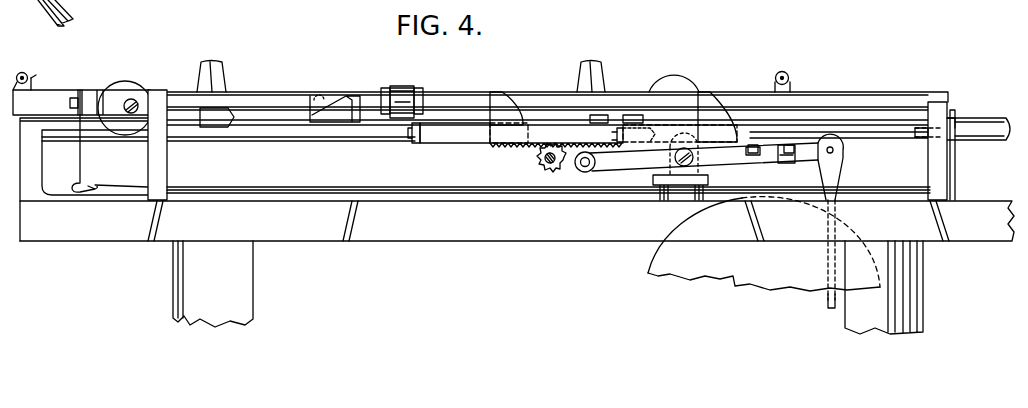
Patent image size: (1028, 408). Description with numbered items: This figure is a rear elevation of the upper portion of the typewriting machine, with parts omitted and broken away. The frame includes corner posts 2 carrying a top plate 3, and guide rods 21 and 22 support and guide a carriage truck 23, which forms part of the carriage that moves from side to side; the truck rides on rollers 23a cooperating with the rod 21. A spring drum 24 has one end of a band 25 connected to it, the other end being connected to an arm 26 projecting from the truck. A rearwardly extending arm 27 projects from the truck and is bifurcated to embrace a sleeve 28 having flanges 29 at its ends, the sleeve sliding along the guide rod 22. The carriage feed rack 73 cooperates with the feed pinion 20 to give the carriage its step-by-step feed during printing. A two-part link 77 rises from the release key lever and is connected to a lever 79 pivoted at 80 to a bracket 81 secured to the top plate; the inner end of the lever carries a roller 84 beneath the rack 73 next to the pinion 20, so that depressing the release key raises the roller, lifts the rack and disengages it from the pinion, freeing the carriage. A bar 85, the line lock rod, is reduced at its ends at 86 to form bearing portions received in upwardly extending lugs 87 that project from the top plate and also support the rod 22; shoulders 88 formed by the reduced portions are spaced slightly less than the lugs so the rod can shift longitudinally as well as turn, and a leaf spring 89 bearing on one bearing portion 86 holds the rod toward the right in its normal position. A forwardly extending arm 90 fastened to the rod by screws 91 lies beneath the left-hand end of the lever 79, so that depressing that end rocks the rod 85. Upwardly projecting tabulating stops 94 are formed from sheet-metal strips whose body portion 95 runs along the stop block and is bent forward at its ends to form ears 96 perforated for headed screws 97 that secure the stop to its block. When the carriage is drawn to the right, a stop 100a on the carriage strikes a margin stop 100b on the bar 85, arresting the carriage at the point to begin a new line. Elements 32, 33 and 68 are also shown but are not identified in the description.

The corner posts 2 is at (213, 284).
The top plate 3 is at (517, 221).
The feed pinion 20 is at (542, 168).
The guide rod 21 is at (52, 135).
The guide rod 22 is at (863, 100).
The carriage truck 23 is at (81, 104).
The rollers 23a is at (146, 90).
The spring drum 24 is at (764, 244).
The band 25 is at (256, 187).
The arm 26 is at (84, 160).
The rearwardly extending arm 27 is at (389, 88).
The sleeve 28 is at (402, 90).
The flanges 29 is at (378, 90).
The ring bracket 32 is at (22, 72).
The bracket 33 is at (32, 77).
The knob 68 is at (212, 64).
The carriage feed rack 73 is at (498, 148).
The two-part link 77 is at (843, 183).
The lever 79 is at (752, 155).
The pivot 80 is at (690, 168).
The bracket 81 is at (690, 166).
The roller 84 is at (582, 172).
The line lock rod 85 is at (366, 142).
The reduced bearing portions 86 is at (950, 110).
The lugs 87 is at (167, 162).
The shoulders 88 is at (918, 126).
The leaf spring 89 is at (955, 180).
The forwardly extending arm 90 is at (783, 164).
The screws 91 is at (754, 155).
The tabulating stop 94 is at (498, 96).
The body portion 95 is at (578, 130).
The ears 96 is at (416, 144).
The headed screws 97 is at (400, 138).
The stop 100a is at (347, 96).
The margin stop 100b is at (220, 128).